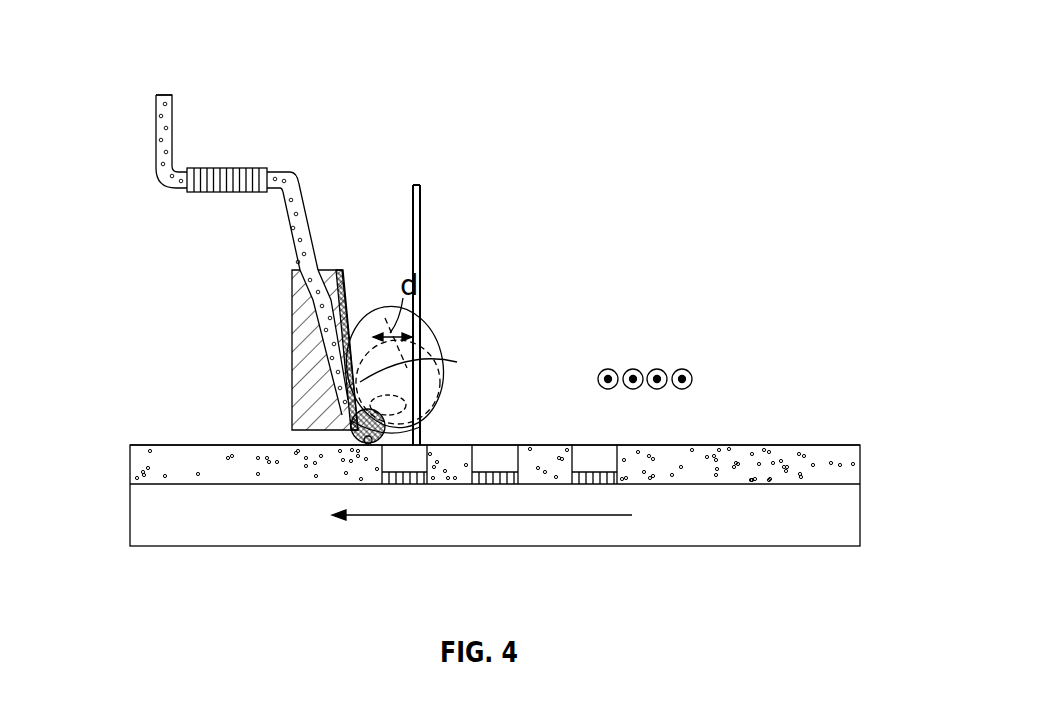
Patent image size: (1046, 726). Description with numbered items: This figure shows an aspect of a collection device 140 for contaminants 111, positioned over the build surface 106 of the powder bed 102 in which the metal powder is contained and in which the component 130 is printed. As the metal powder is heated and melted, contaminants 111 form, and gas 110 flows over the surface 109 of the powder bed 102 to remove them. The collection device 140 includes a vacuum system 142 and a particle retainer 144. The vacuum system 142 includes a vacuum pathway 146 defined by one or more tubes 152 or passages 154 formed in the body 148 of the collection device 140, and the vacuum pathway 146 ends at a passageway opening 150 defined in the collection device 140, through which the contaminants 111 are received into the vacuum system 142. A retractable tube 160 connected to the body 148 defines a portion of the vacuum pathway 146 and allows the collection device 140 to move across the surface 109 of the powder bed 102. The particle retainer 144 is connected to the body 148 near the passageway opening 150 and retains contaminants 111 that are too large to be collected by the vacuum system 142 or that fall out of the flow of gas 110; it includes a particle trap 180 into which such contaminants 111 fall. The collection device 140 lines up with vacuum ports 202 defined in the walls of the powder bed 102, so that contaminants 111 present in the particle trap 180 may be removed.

The collection device 140 is at (130, 74).
The vacuum system 142 is at (290, 175).
The particle retainer 144 is at (420, 427).
The vacuum pathway 146 is at (288, 220).
The body 148 is at (300, 390).
The passageway opening 150 is at (350, 313).
The tubes 152 is at (173, 190).
The passages 154 is at (312, 322).
The retractable tube 160 is at (213, 168).
The particle trap 180 is at (367, 445).
The contaminants 111 is at (457, 362).
The vacuum ports 202 is at (433, 390).
The gas 110 is at (660, 343).
The component 130 is at (592, 462).
The surface 109 is at (745, 440).
The powder bed 102 is at (860, 465).
The build surface 106 is at (855, 517).